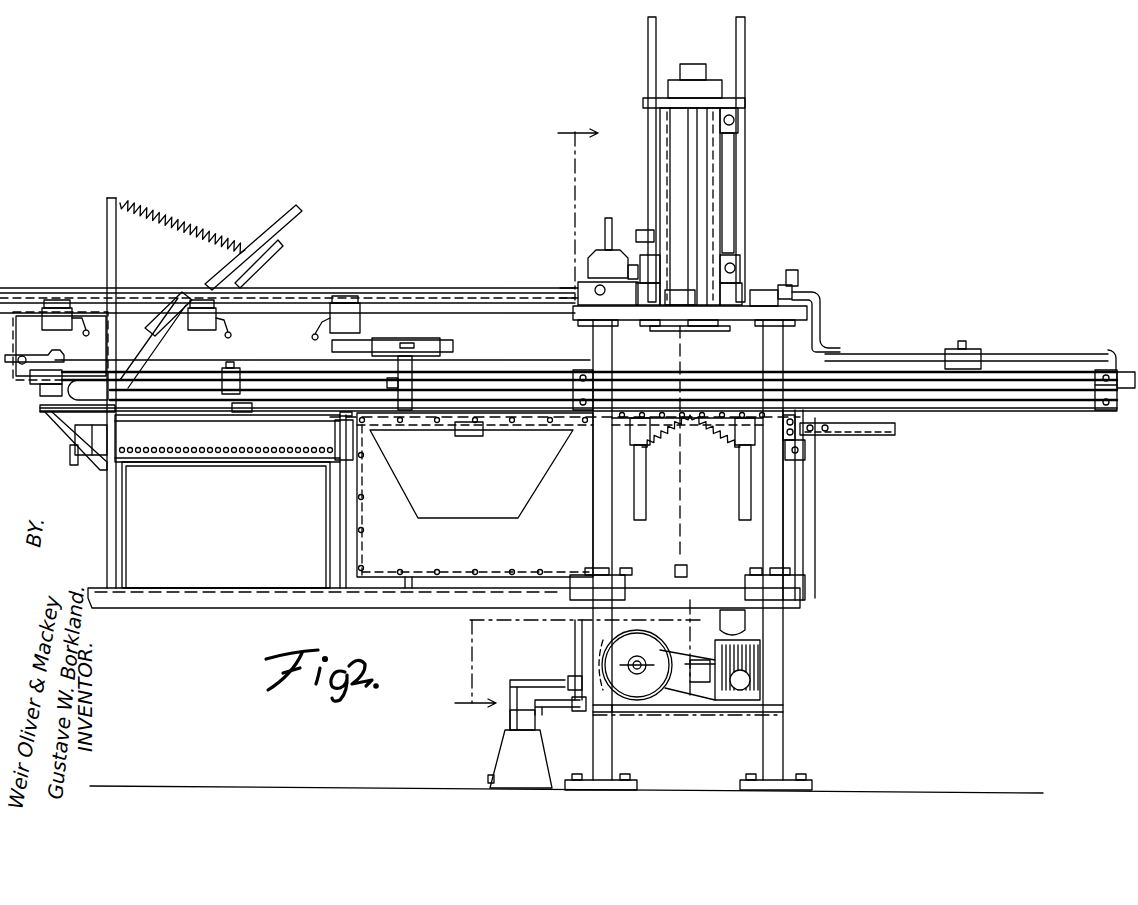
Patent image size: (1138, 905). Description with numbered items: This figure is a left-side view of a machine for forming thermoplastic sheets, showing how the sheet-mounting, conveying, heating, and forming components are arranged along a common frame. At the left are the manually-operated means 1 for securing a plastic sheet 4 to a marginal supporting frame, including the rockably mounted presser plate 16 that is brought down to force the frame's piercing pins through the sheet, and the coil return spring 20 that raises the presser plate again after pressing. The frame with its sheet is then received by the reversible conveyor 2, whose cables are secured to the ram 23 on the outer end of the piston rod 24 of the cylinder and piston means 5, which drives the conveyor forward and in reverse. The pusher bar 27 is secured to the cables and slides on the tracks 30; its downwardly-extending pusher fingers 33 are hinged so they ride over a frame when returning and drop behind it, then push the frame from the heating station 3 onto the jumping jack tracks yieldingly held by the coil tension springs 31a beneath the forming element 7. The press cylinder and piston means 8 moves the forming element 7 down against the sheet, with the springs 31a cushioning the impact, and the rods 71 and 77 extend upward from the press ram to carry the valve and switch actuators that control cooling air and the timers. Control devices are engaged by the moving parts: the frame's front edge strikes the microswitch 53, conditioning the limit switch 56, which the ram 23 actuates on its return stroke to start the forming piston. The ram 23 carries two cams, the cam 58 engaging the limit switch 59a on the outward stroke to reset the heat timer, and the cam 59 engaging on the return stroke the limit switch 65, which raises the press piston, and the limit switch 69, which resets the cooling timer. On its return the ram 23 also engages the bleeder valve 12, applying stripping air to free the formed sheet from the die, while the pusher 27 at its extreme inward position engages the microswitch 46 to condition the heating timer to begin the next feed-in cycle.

The manually-operated means 1 is at (303, 208).
The reversible conveyor 2 is at (470, 370).
The heating station 3 is at (232, 430).
The plastic sheet 4 is at (526, 418).
The cylinder and piston means 5 is at (938, 390).
The forming element 7 is at (718, 320).
The cylinder and piston means 8 is at (698, 162).
The bleeder valve 12 is at (178, 338).
The presser plate 16 is at (280, 256).
The coil return spring 20 is at (190, 222).
The ram 23 is at (403, 410).
The piston rod 24 is at (567, 410).
The pusher bar 27 is at (233, 380).
The tracks 30 is at (262, 383).
The springs 31a is at (732, 432).
The pusher fingers 33 is at (255, 408).
The microswitch 46 is at (43, 383).
The microswitch 53 is at (830, 425).
The limit switch 56 is at (80, 395).
The cam 58 is at (432, 342).
The cam 59 is at (380, 342).
The limit switch 59a is at (348, 325).
The limit switch 65 is at (55, 318).
The limit switch 69 is at (215, 325).
The rod 71 is at (648, 58).
The rod 77 is at (745, 58).